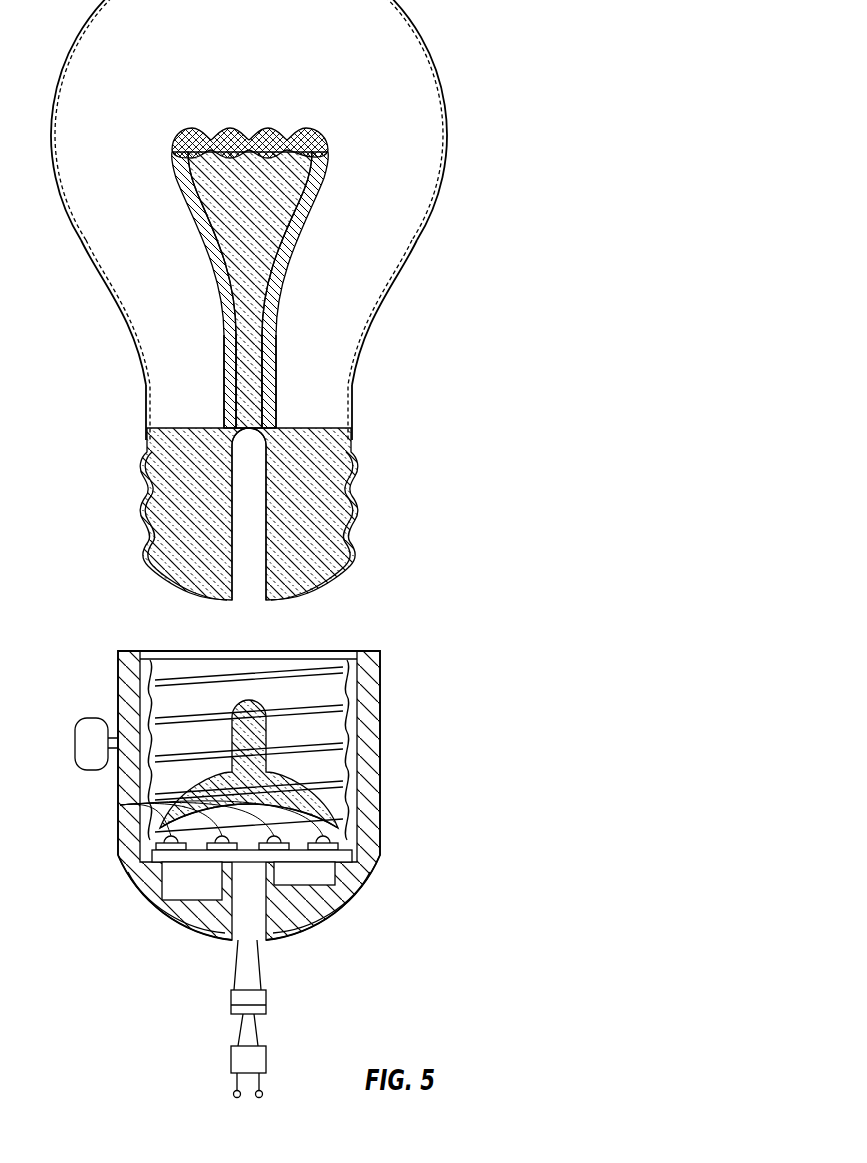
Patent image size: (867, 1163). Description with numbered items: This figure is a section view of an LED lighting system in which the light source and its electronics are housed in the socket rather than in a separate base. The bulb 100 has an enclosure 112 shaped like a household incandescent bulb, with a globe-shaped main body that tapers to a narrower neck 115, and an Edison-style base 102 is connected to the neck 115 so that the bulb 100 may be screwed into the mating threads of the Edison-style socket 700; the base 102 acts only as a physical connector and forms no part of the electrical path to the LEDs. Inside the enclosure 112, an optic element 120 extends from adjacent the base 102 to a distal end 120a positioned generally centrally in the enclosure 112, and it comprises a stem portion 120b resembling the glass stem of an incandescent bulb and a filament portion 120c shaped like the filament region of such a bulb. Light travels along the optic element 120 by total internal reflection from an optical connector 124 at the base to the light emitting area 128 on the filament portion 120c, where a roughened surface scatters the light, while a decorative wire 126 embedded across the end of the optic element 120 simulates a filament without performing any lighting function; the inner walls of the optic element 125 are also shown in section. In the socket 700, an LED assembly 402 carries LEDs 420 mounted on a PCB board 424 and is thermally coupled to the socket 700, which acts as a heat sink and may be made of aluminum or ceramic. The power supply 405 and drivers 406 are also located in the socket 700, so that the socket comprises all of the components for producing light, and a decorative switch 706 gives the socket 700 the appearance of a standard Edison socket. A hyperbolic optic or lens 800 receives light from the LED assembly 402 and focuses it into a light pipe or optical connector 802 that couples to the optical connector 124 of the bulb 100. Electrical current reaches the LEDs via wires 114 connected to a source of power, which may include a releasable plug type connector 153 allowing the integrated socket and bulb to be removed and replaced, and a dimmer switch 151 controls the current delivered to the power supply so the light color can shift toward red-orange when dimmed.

The bulb 100 is at (432, 50).
The enclosure 112 is at (448, 183).
The wires 114 is at (382, 293).
The neck 115 is at (355, 395).
The Edison-style base 102 is at (355, 495).
The optical connector 124 is at (265, 577).
The optic element 120 is at (244, 221).
The distal end 120a is at (172, 145).
The stem portion 120b is at (278, 310).
The filament portion 120c is at (312, 202).
The inner guide walls 125 is at (263, 372).
The wire 126 is at (213, 152).
The light emitting area 128 is at (300, 128).
The Edison-style socket 700 is at (382, 717).
The switch 706 is at (75, 742).
The light pipe or optical connector 802 is at (265, 708).
The hyperbolic optic or lens 800 is at (323, 795).
The LEDs 420 is at (120, 805).
The LED assembly 402 is at (346, 852).
The PCB board 424 is at (340, 858).
The power supply 405 is at (183, 895).
The drivers 406 is at (310, 880).
The releasable plug type connector 153 is at (276, 998).
The dimmer switch 151 is at (267, 1062).